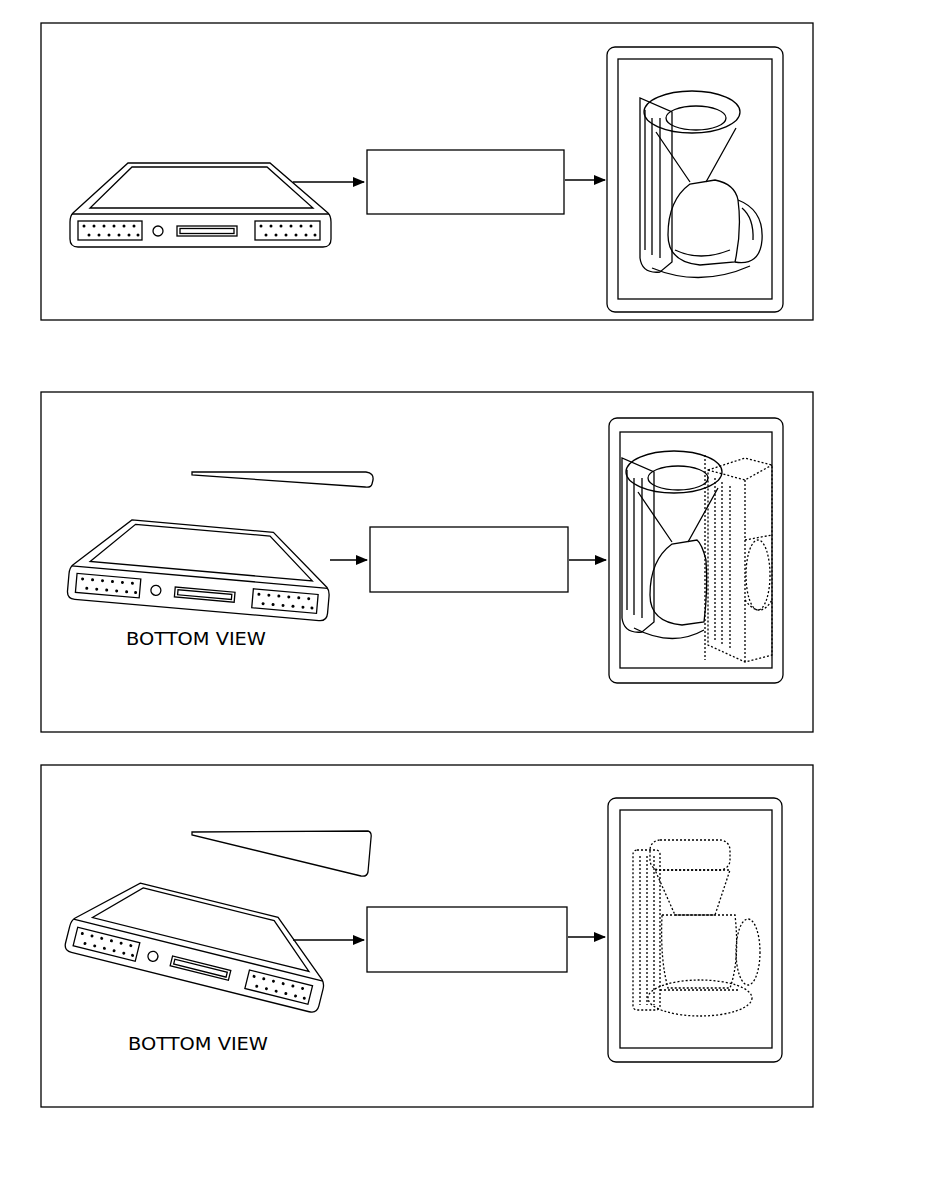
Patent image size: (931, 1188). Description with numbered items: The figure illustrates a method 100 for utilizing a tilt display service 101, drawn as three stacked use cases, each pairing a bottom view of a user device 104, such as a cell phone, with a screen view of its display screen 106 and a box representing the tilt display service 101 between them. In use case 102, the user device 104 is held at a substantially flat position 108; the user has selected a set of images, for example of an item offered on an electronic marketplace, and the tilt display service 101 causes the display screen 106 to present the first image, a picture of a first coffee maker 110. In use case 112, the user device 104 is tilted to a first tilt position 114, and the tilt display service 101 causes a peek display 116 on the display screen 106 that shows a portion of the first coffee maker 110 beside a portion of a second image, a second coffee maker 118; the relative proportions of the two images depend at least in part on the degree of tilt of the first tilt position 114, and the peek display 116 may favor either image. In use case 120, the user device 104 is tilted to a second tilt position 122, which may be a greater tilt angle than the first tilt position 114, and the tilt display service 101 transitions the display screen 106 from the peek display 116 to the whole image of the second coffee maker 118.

The method 100 is at (614, 1126).
The tilt display service 101 is at (467, 561).
The use case 102 is at (427, 171).
The user device 104 is at (130, 158).
The display screen 106 is at (280, 178).
The substantially flat position 108 is at (292, 260).
The first coffee maker 110 is at (640, 600).
The use case 112 is at (427, 562).
The first tilt position 114 is at (372, 471).
The peek display 116 is at (698, 635).
The second coffee maker 118 is at (757, 514).
The use case 120 is at (427, 936).
The second tilt position 122 is at (372, 831).